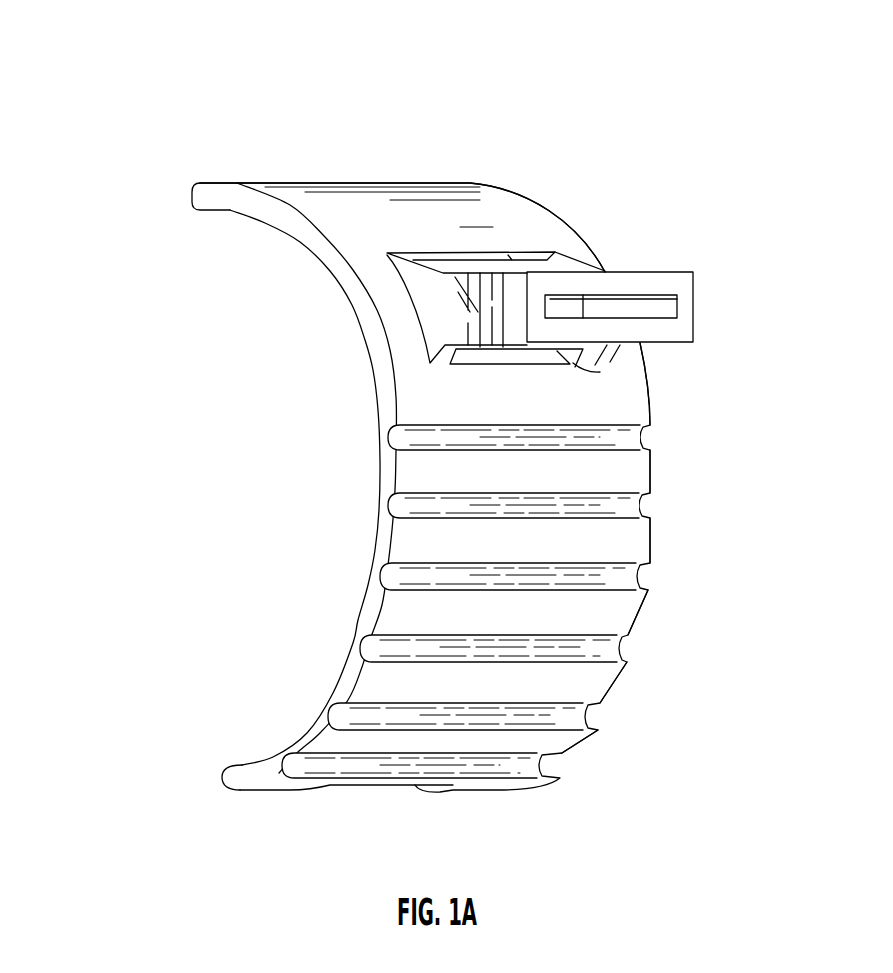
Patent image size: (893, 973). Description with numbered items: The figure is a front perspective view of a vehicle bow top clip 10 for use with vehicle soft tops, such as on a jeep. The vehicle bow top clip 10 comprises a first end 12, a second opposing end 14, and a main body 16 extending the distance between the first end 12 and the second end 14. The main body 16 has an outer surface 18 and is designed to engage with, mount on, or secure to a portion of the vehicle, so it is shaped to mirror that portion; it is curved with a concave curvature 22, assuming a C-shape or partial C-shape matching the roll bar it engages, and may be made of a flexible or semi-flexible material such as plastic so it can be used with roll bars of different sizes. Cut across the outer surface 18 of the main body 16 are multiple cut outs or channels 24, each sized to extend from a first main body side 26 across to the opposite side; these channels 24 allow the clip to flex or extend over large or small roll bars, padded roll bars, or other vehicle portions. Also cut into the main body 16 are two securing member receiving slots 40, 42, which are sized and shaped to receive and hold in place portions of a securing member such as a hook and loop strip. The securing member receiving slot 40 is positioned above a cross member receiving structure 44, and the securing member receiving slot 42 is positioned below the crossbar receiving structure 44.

The vehicle bow top clip 10 is at (74, 145).
The first end 12 is at (191, 198).
The second opposing end 14 is at (221, 783).
The main body 16 is at (637, 402).
The outer surface 18 is at (484, 213).
The concave curvature 22 is at (379, 488).
The channels 24 is at (537, 766).
The first main body side 26 is at (370, 333).
The securing member receiving slot 40 is at (538, 253).
The securing member receiving slot 42 is at (600, 372).
The cross member receiving structure 44 is at (694, 290).